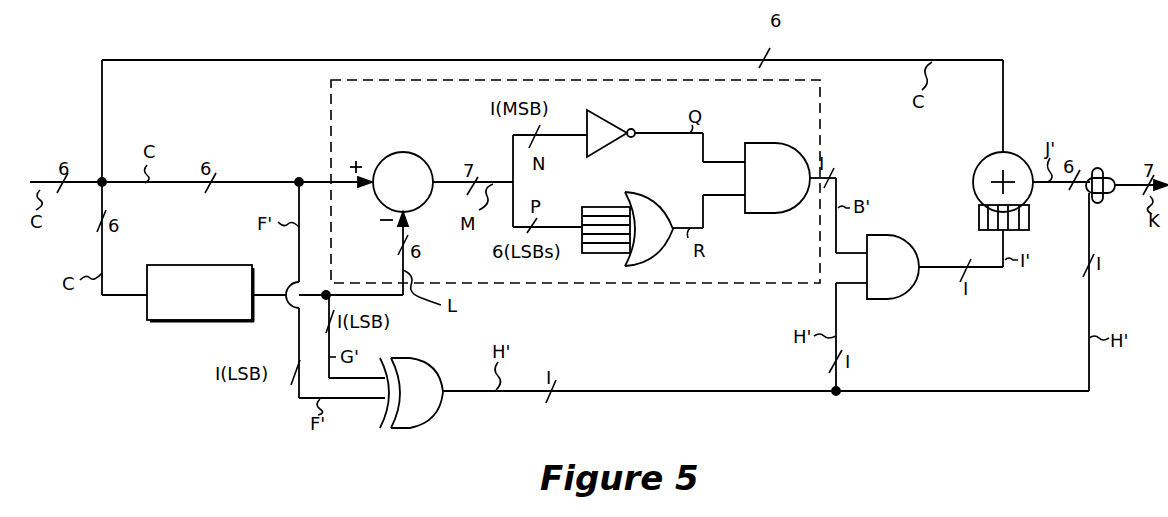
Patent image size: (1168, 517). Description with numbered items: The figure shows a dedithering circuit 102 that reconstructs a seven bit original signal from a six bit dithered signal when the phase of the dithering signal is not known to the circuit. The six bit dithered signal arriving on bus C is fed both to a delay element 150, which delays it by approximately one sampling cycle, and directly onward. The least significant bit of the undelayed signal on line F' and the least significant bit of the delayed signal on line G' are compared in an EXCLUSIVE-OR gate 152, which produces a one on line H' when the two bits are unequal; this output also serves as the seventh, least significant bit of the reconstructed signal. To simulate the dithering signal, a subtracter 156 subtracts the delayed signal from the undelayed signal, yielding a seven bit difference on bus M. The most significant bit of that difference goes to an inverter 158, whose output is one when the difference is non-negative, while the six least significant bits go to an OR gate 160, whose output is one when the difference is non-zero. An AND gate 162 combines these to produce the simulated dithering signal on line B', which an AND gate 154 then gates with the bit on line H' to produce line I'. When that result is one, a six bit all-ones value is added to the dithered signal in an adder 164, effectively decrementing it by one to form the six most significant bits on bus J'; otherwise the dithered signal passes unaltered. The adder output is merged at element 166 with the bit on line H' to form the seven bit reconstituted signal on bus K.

The dedithering circuit 102 is at (1050, 452).
The delay element 150 is at (175, 321).
The EXCLUSIVE-OR gate 152 is at (425, 406).
The AND gate 154 is at (888, 300).
The subtracter 156 is at (408, 152).
The inverter 158 is at (612, 120).
The OR gate 160 is at (650, 208).
The AND gate 162 is at (768, 214).
The adder 164 is at (984, 162).
The combiner connector 166 is at (1096, 168).